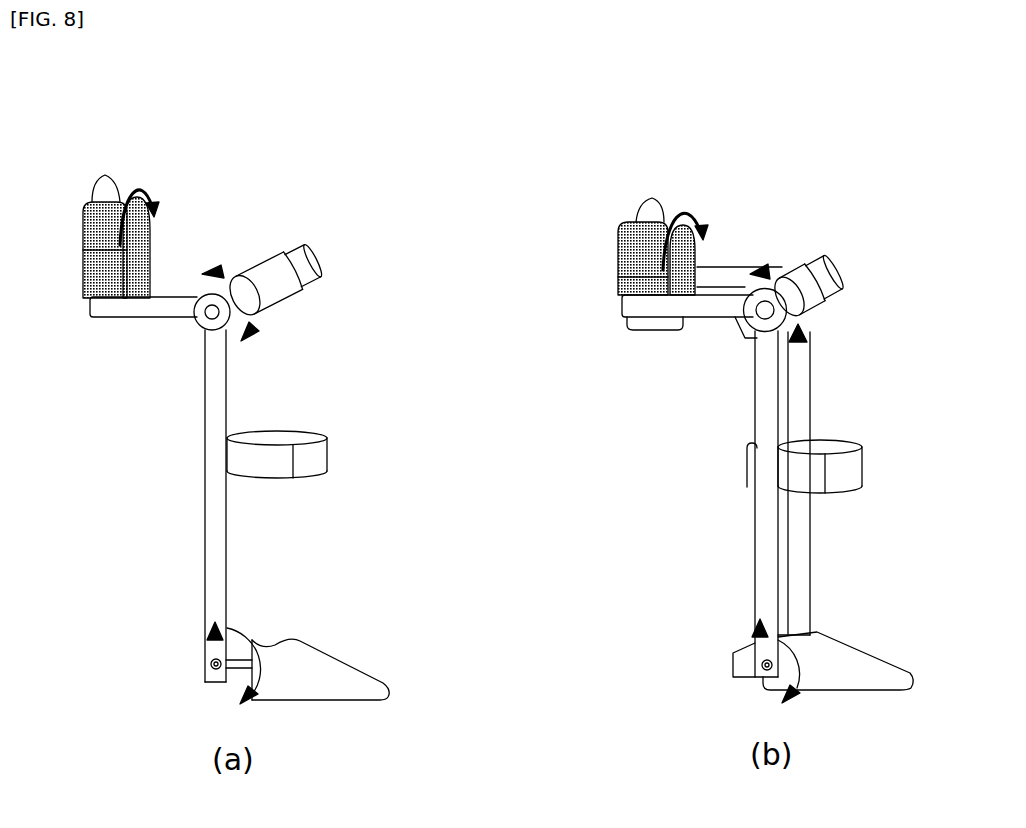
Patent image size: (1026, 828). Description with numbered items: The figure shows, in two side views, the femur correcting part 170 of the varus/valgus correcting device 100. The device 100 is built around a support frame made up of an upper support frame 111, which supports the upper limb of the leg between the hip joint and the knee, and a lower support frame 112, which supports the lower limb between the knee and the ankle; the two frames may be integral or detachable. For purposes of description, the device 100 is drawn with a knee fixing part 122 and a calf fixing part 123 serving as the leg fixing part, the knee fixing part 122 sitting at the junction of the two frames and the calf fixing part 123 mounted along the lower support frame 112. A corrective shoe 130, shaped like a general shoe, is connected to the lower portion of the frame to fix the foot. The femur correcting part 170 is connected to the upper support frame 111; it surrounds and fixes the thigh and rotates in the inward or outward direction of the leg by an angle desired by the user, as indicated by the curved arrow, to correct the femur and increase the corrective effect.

The varus/valgus correcting device 100 is at (88, 128).
The upper support frame 111 is at (157, 305).
The lower support frame 112 is at (210, 487).
The knee fixing part 122 is at (303, 253).
The calf fixing part 123 is at (308, 467).
The corrective shoe 130 is at (295, 660).
The femur correcting part 170 is at (92, 278).